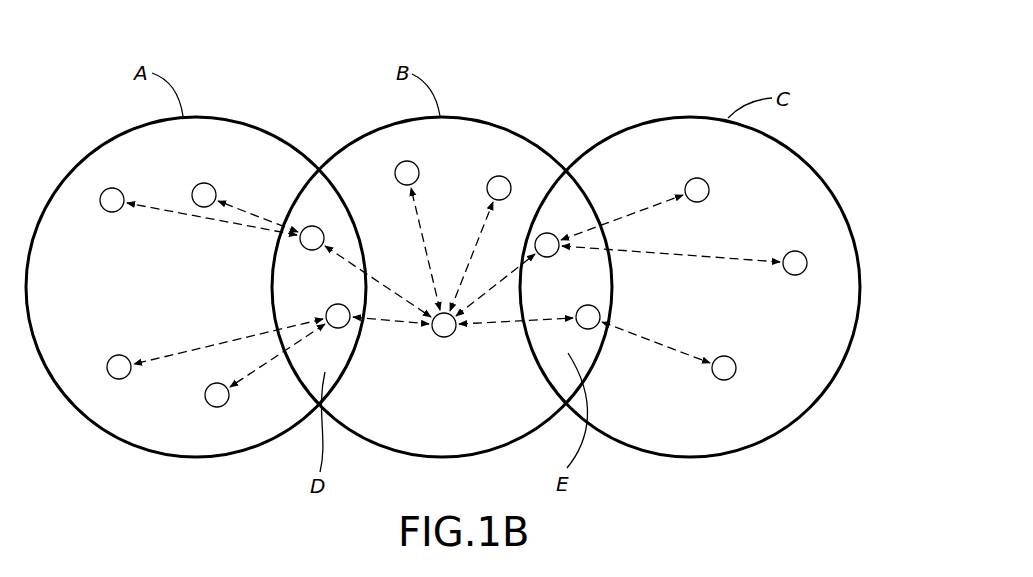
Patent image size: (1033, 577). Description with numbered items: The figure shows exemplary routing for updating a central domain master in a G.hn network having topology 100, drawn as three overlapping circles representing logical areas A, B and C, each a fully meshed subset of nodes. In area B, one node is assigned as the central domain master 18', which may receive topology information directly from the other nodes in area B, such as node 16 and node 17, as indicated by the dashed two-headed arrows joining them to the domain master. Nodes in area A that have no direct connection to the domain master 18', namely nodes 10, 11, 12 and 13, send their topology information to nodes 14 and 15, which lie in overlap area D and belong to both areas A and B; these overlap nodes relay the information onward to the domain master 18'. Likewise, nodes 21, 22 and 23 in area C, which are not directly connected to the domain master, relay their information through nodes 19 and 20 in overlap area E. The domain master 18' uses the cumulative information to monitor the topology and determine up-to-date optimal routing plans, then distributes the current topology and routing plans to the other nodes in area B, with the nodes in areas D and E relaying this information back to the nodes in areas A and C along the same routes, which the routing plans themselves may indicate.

The topology 100 is at (646, 64).
The node 10 is at (113, 188).
The node 11 is at (202, 183).
The node 12 is at (120, 355).
The node 13 is at (205, 394).
The node 14 is at (310, 232).
The node 15 is at (342, 326).
The node 16 is at (407, 185).
The node 17 is at (500, 176).
The central domain master 18' is at (455, 350).
The node 19 is at (535, 245).
The node 20 is at (597, 328).
The node 21 is at (690, 180).
The node 22 is at (793, 251).
The node 23 is at (730, 357).